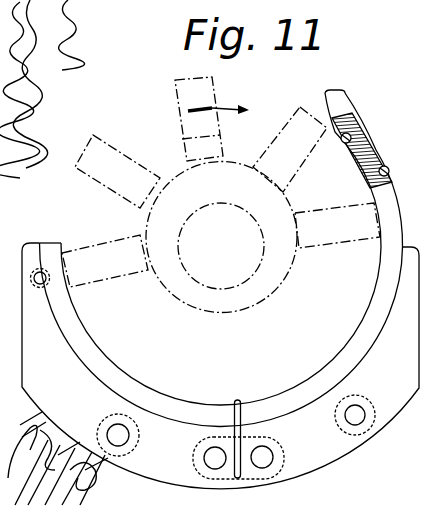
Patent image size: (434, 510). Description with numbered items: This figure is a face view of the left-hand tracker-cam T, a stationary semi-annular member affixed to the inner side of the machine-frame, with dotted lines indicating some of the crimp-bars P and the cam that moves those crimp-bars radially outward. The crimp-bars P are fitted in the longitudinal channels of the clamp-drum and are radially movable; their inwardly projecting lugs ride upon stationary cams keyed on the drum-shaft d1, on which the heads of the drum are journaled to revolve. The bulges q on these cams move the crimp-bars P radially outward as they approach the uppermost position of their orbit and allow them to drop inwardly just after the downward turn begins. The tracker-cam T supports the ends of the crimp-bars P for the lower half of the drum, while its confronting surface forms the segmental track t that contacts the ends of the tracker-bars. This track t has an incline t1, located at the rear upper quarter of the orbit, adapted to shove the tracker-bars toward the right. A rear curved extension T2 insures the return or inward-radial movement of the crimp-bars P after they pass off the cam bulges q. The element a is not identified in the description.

The left-hand tracker-cam T is at (220, 366).
The segmental track t is at (382, 286).
The rear curved or inclined extension T2 is at (342, 102).
The incline t1 is at (373, 151).
The rotor drum a is at (229, 314).
The drum-shaft d1 is at (221, 246).
The crimp-bars P is at (135, 278).
The bulges q is at (178, 168).